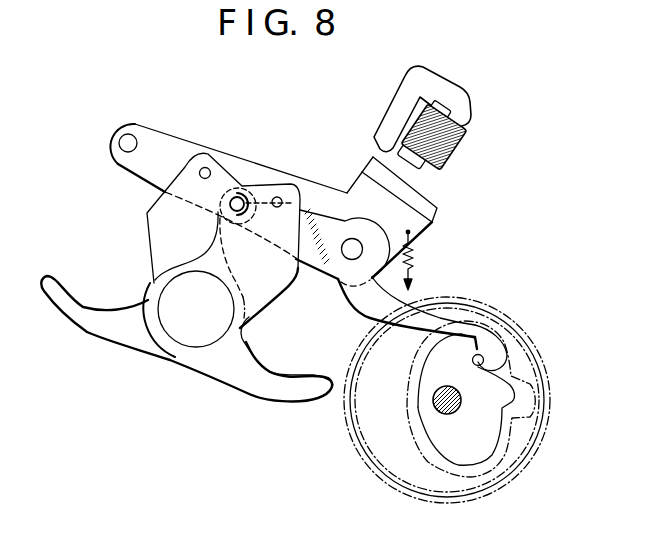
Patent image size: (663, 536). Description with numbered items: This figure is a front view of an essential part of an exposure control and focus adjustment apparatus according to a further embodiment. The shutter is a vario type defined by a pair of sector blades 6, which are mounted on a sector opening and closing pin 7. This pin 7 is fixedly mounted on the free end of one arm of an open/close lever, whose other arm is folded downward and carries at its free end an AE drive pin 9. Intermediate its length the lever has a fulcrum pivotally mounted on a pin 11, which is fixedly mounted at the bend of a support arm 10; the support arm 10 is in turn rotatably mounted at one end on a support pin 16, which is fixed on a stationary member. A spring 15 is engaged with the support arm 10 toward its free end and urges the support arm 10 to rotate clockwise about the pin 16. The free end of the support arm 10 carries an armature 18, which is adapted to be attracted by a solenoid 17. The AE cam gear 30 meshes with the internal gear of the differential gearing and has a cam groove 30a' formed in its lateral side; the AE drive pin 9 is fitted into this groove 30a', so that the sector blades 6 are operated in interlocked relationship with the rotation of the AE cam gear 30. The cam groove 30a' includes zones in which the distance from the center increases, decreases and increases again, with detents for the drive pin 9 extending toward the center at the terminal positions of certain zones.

The sector blades 6 is at (147, 345).
The sector opening and closing pin 7 is at (228, 201).
The AE drive pin 9 is at (472, 360).
The support arm 10 is at (312, 200).
The pin 11 is at (357, 247).
The spring 15 is at (414, 258).
The support pin 16 is at (131, 137).
The solenoid 17 is at (437, 126).
The armature 18 is at (428, 213).
The AE cam gear 30 is at (541, 380).
The cam groove 30a' is at (471, 427).